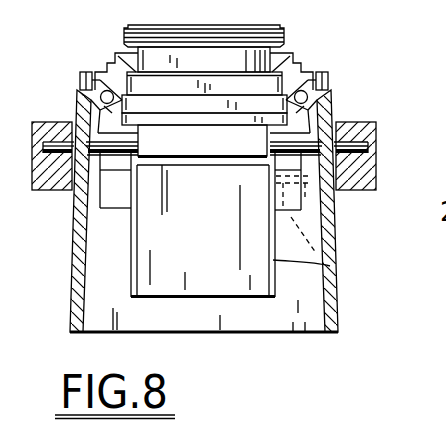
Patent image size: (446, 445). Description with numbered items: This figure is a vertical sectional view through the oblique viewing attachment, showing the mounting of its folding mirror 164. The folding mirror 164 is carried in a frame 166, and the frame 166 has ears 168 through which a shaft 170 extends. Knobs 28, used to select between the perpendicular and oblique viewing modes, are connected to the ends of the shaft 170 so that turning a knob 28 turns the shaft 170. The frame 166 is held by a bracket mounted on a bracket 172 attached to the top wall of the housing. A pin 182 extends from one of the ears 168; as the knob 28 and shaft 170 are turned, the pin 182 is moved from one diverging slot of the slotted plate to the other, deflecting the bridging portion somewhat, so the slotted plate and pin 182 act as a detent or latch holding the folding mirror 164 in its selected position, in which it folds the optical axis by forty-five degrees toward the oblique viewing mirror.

The knob 28 is at (55, 192).
The folding mirror 164 is at (236, 290).
The frame 166 is at (336, 303).
The ears 168 is at (77, 108).
The shaft 170 is at (368, 128).
The bracket 172 is at (305, 200).
The pin 182 is at (330, 266).